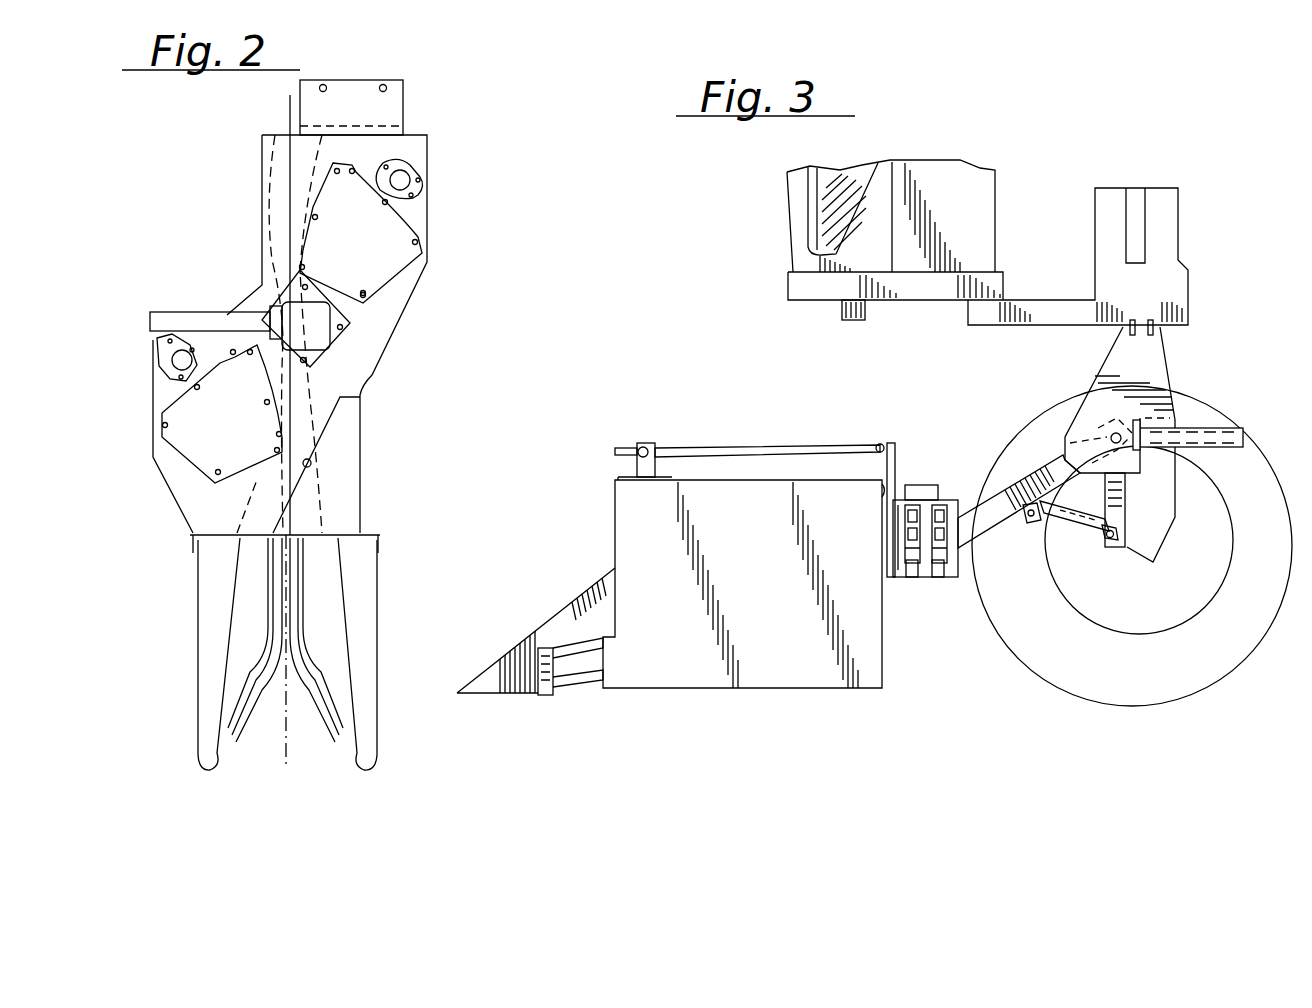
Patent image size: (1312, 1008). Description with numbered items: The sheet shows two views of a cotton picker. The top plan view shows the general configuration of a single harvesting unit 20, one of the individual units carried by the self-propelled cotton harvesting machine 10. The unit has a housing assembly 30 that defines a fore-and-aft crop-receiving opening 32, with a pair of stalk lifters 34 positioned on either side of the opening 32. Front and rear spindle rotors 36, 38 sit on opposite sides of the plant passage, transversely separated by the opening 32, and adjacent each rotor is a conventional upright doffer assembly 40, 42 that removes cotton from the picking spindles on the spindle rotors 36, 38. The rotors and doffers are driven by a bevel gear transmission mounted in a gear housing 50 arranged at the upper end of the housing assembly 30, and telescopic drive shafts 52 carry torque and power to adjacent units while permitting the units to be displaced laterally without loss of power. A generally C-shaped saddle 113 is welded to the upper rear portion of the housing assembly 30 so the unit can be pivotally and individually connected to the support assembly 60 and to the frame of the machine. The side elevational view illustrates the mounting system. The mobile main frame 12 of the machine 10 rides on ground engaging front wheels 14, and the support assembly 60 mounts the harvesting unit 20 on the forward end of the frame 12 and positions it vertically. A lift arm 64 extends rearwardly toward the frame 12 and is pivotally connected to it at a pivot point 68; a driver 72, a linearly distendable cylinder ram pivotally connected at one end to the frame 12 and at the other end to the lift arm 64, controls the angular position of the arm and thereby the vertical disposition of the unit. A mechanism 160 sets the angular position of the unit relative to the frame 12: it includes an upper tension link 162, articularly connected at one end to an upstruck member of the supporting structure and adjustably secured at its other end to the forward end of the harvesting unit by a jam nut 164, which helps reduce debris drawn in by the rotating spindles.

In FIG. 3, the cotton harvesting machine 10 is at (1058, 156).
In FIG. 3, the main frame 12 is at (800, 287).
In FIG. 3, the front wheels 14 is at (1140, 677).
In FIG. 3, the harvesting unit 20 is at (745, 691).
In FIG. 2, the housing assembly 30 is at (353, 366).
In FIG. 2, the crop-receiving opening 32 is at (312, 461).
In FIG. 2, the stalk lifters 34 is at (378, 612).
In FIG. 3, the stalk lifters 34 is at (492, 693).
In FIG. 2, the front spindle rotor 36 is at (200, 468).
In FIG. 2, the rear spindle rotor 38 is at (428, 242).
In FIG. 2, the doffer assembly 40 is at (155, 373).
In FIG. 2, the doffer assembly 42 is at (420, 178).
In FIG. 2, the gear housing 50 is at (350, 322).
In FIG. 2, the telescopic drive shafts 52 is at (197, 325).
In FIG. 3, the support assembly 60 is at (922, 580).
In FIG. 3, the lift arm 64 is at (990, 527).
In FIG. 3, the pivot point 68 is at (1080, 441).
In FIG. 3, the driver 72 is at (1074, 533).
In FIG. 2, the saddle 113 is at (364, 110).
In FIG. 3, the mechanism 160 is at (764, 447).
In FIG. 3, the tension link 162 is at (852, 447).
In FIG. 3, the jam nut 164 is at (645, 443).